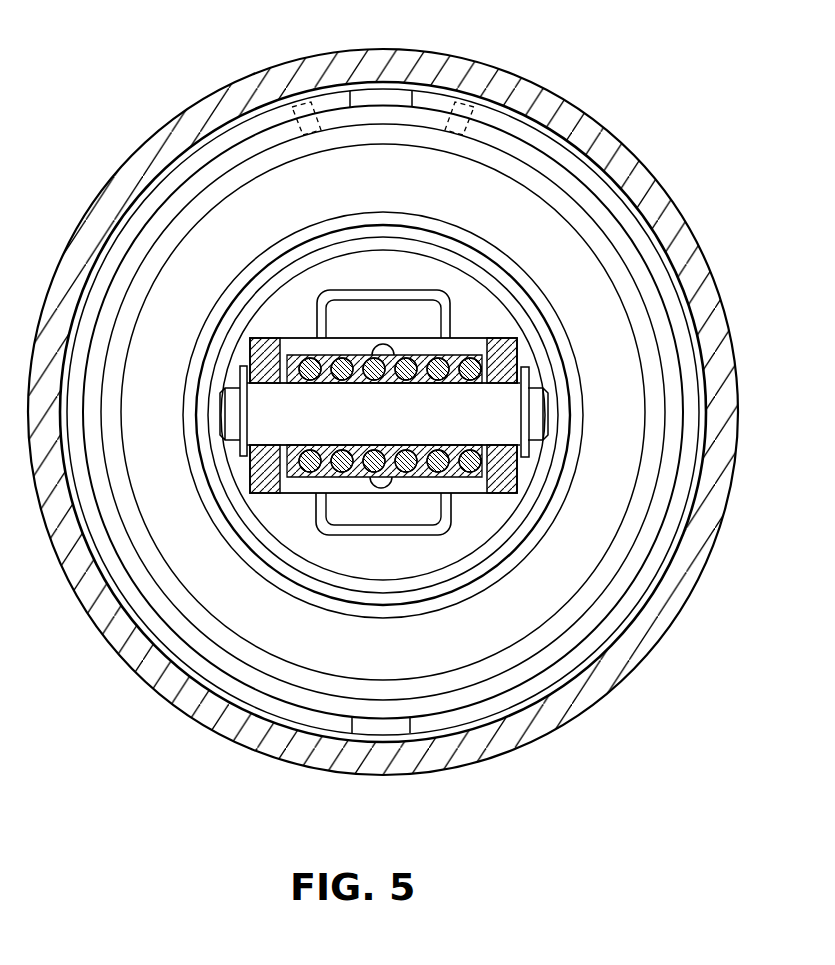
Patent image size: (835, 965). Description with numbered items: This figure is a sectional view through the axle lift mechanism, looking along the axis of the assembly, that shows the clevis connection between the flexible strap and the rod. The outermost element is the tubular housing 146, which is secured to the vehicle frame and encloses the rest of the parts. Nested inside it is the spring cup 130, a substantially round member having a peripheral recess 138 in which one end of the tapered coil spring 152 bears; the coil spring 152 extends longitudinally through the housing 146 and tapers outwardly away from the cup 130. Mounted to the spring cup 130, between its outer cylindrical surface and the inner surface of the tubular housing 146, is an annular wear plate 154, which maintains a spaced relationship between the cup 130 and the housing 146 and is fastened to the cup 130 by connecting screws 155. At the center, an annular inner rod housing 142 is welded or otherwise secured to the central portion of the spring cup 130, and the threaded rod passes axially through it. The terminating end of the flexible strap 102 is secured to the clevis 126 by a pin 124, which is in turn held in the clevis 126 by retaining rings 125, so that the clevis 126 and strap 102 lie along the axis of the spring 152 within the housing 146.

The flexible strap 102 is at (310, 358).
The pin 124 is at (535, 452).
The retaining rings 125 is at (243, 372).
The clevis 126 is at (377, 424).
The spring cup 130 is at (487, 125).
The peripheral recess 138 is at (568, 213).
The annular inner rod housing 142 is at (380, 290).
The tubular housing 146 is at (593, 117).
The tapered coil spring 152 is at (617, 285).
The annular wear plate 154 is at (428, 90).
The connecting screws 155 is at (290, 106).